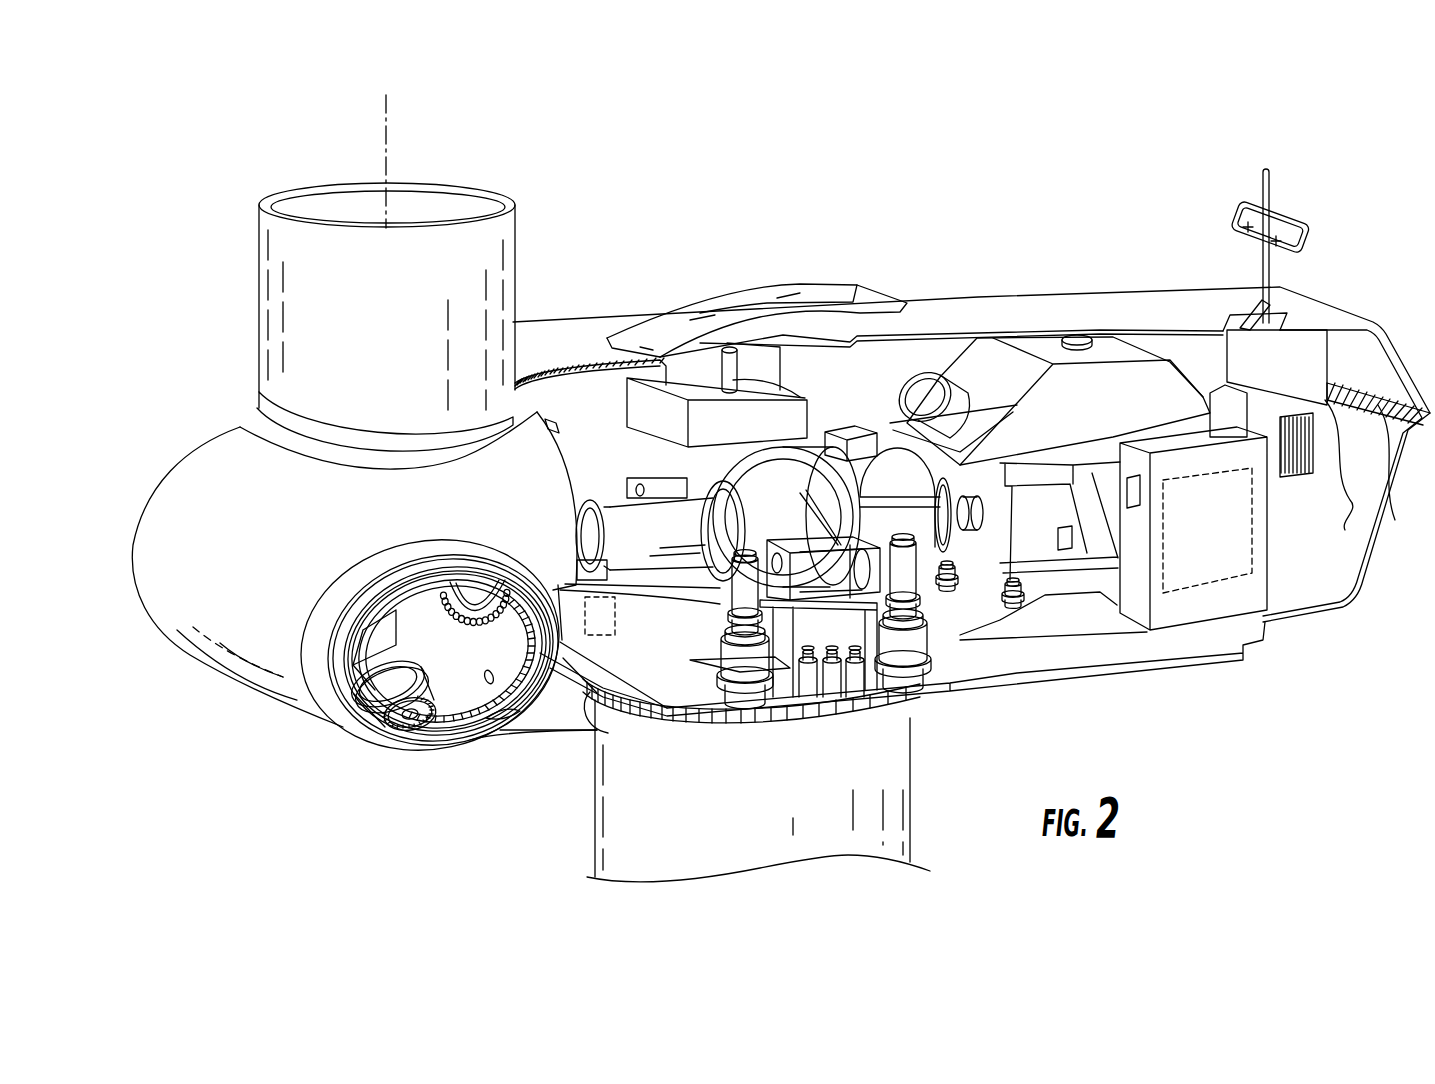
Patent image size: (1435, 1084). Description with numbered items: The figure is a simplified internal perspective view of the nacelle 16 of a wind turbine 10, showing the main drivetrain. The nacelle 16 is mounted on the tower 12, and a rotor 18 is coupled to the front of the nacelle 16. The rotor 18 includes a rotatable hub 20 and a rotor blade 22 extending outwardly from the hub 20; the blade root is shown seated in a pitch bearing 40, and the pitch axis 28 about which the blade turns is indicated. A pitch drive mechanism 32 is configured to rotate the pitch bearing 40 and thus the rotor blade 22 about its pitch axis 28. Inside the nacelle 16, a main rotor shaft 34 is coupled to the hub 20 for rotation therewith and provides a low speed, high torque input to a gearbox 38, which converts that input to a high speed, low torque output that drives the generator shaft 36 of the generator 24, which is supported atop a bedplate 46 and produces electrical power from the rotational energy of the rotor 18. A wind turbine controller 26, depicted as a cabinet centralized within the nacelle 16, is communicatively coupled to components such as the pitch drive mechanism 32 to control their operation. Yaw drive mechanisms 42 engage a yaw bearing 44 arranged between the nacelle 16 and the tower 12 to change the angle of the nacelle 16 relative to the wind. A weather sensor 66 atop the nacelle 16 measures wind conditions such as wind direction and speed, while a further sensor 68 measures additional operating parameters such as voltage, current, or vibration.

The wind turbine 10 is at (1053, 182).
The tower 12 is at (585, 840).
The nacelle 16 is at (630, 299).
The rotor 18 is at (134, 459).
The rotatable hub 20 is at (190, 610).
The rotor blade 22 is at (245, 276).
The generator 24 is at (1041, 403).
The wind turbine controller 26 is at (1262, 545).
The pitch axis 28 is at (386, 170).
The pitch drive mechanism 32 is at (450, 701).
The main rotor shaft 34 is at (623, 533).
The generator shaft 36 is at (975, 517).
The gearbox 38 is at (835, 495).
The pitch bearing 40 is at (362, 733).
The yaw drive mechanism 42 is at (705, 707).
The yaw bearing 44 is at (817, 720).
The bedplate 46 is at (644, 686).
The weather sensor 66 is at (1273, 195).
The sensor 68 is at (615, 617).